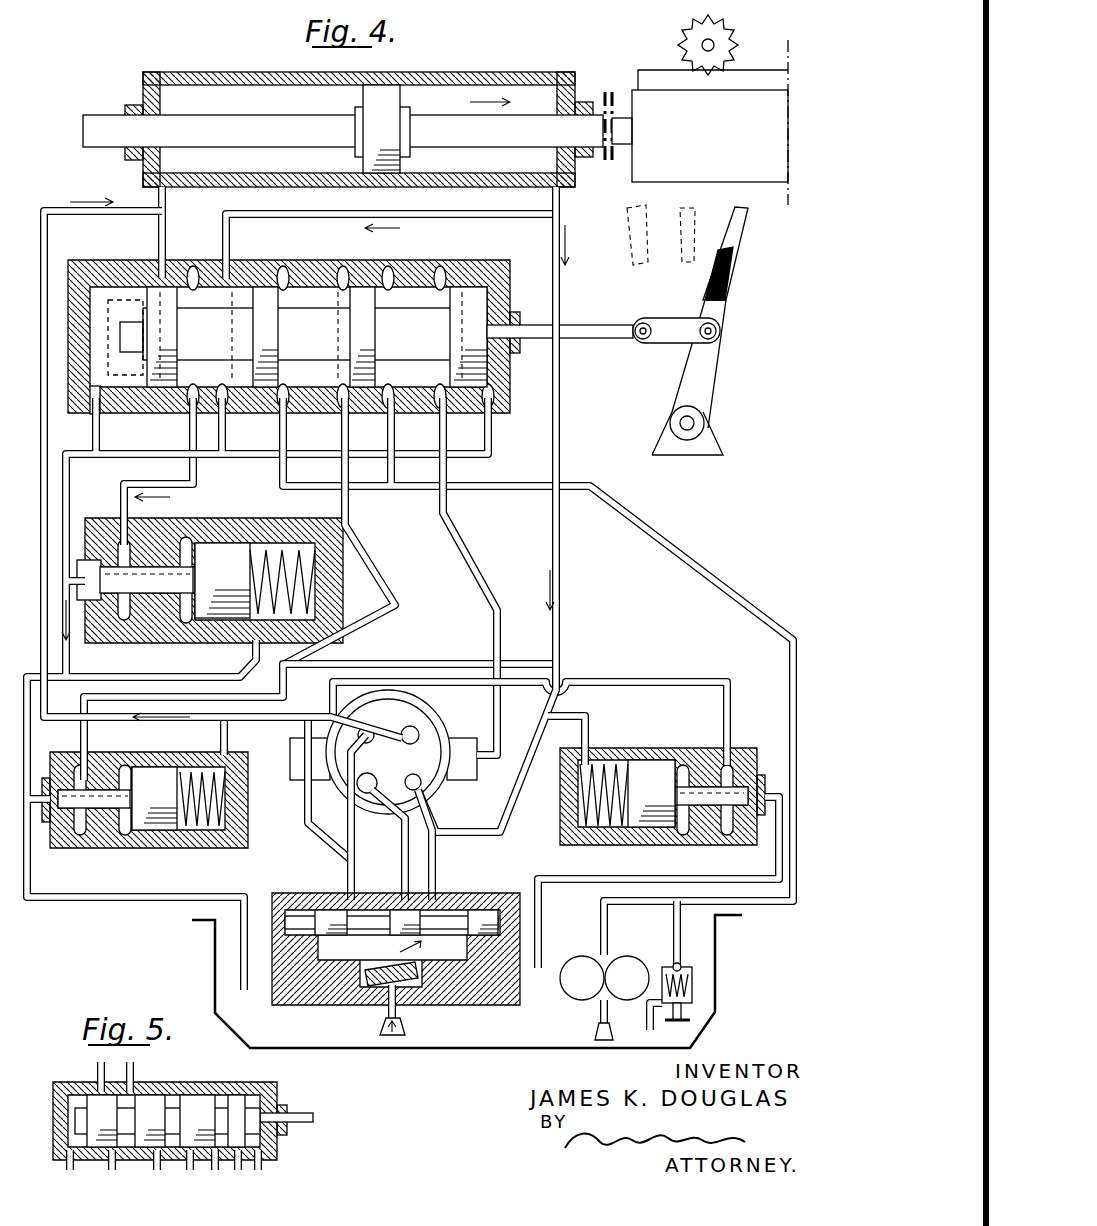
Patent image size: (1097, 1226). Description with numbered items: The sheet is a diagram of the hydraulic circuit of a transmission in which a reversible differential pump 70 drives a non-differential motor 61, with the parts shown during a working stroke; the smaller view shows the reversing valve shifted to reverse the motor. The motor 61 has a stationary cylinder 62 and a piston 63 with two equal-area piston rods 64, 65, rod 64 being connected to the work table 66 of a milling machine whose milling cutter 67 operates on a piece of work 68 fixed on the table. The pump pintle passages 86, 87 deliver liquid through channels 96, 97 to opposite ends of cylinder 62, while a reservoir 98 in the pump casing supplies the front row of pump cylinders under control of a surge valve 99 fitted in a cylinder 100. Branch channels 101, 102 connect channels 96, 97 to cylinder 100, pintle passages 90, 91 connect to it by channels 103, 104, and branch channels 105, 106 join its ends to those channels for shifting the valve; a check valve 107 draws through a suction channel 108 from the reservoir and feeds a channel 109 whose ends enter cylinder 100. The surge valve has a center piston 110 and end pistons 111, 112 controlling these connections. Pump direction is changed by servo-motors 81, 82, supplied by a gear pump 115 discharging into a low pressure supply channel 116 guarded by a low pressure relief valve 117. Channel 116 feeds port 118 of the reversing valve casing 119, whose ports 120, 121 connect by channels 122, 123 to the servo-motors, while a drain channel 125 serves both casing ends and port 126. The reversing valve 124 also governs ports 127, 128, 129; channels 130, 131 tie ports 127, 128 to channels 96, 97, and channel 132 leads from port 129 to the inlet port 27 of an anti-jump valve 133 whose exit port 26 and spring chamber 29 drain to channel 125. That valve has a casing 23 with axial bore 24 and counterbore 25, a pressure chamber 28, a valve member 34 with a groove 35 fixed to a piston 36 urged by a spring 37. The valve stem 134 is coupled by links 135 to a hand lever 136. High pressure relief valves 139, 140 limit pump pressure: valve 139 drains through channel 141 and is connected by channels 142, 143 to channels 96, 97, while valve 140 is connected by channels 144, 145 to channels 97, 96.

In FIG. 4, the non-differential motor 61 is at (357, 106).
In FIG. 4, the cylinder 62 is at (520, 90).
In FIG. 4, the piston 63 is at (382, 129).
In FIG. 4, the piston rod 64 is at (501, 131).
In FIG. 4, the piston rod 65 is at (223, 131).
In FIG. 4, the work table 66 is at (710, 136).
In FIG. 4, the milling cutter 67 is at (737, 31).
In FIG. 4, the piece of work 68 is at (650, 78).
In FIG. 4, the reversible differential pump 70 is at (397, 752).
In FIG. 4, the hydraulic servo-motor 81 is at (480, 776).
In FIG. 4, the hydraulic servo-motor 82 is at (292, 778).
In FIG. 4, the pintle passage 86 is at (403, 728).
In FIG. 4, the pintle passage 87 is at (378, 780).
In FIG. 4, the pintle passage 90 is at (359, 743).
In FIG. 4, the pintle passage 91 is at (425, 777).
In FIG. 4, the channel 96 is at (144, 210).
In FIG. 4, the channel 97 is at (562, 210).
In FIG. 4, the reservoir 98 is at (528, 1040).
In FIG. 4, the surge valve 99 is at (490, 940).
In FIG. 4, the cylinder 100 is at (397, 948).
In FIG. 4, the branch channel 101 is at (320, 832).
In FIG. 4, the branch channel 102 is at (404, 834).
In FIG. 4, the channel 103 is at (350, 864).
In FIG. 4, the channel 104 is at (437, 855).
In FIG. 4, the branch channel 105 is at (293, 893).
In FIG. 4, the branch channel 106 is at (490, 893).
In FIG. 4, the check valve 107 is at (365, 990).
In FIG. 4, the suction channel 108 is at (399, 1005).
In FIG. 4, the channel 109 is at (392, 945).
In FIG. 4, the center piston 110 is at (405, 922).
In FIG. 4, the end piston 111 is at (331, 922).
In FIG. 4, the end piston 112 is at (483, 922).
In FIG. 4, the gear pump 115 is at (572, 990).
In FIG. 4, the low pressure supply channel 116 is at (521, 486).
In FIG. 5, the low pressure supply channel 116 is at (213, 1168).
In FIG. 4, the low pressure relief valve 117 is at (677, 962).
In FIG. 4, the port 118 is at (389, 272).
In FIG. 4, the reversing valve casing 119 is at (294, 335).
In FIG. 5, the reversing valve casing 119 is at (188, 1121).
In FIG. 4, the port 120 is at (441, 272).
In FIG. 4, the port 121 is at (344, 272).
In FIG. 4, the channel 122 is at (493, 622).
In FIG. 5, the channel 122 is at (258, 1168).
In FIG. 4, the channel 123 is at (398, 600).
In FIG. 5, the channel 123 is at (190, 1168).
In FIG. 4, the reversing valve 124 is at (297, 337).
In FIG. 5, the reversing valve 124 is at (167, 1121).
In FIG. 4, the drain channel 125 is at (66, 490).
In FIG. 5, the drain channel 125 is at (66, 1168).
In FIG. 4, the port 126 is at (284, 273).
In FIG. 4, the port 127 is at (163, 400).
In FIG. 4, the port 128 is at (223, 405).
In FIG. 4, the port 129 is at (197, 278).
In FIG. 4, the channel 130 is at (165, 230).
In FIG. 5, the channel 130 is at (96, 1068).
In FIG. 4, the channel 131 is at (341, 218).
In FIG. 5, the channel 131 is at (135, 1068).
In FIG. 4, the channel 132 is at (160, 472).
In FIG. 5, the channel 132 is at (111, 1168).
In FIG. 4, the anti-jump valve 133 is at (349, 545).
In FIG. 4, the stem 134 is at (632, 328).
In FIG. 4, the link 135 is at (676, 330).
In FIG. 4, the hand lever 136 is at (712, 375).
In FIG. 4, the high pressure relief valve 139 is at (661, 792).
In FIG. 4, the high pressure relief valve 140 is at (164, 801).
In FIG. 4, the drain channel 141 is at (548, 896).
In FIG. 4, the channel 142 is at (662, 678).
In FIG. 4, the channel 143 is at (585, 734).
In FIG. 4, the channel 144 is at (462, 665).
In FIG. 4, the channel 145 is at (226, 738).
In FIG. 4, the casing 23 is at (232, 582).
In FIG. 4, the axial bore 24 is at (152, 640).
In FIG. 4, the counterbore 25 is at (232, 543).
In FIG. 4, the exit port 26 is at (89, 580).
In FIG. 4, the inlet port 27 is at (126, 540).
In FIG. 4, the pressure chamber 28 is at (186, 537).
In FIG. 4, the spring chamber 29 is at (298, 548).
In FIG. 4, the valve member 34 is at (147, 580).
In FIG. 4, the groove 35 is at (196, 585).
In FIG. 4, the piston 36 is at (222, 580).
In FIG. 4, the spring 37 is at (357, 527).